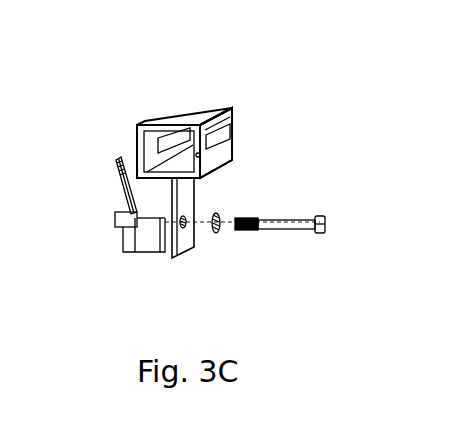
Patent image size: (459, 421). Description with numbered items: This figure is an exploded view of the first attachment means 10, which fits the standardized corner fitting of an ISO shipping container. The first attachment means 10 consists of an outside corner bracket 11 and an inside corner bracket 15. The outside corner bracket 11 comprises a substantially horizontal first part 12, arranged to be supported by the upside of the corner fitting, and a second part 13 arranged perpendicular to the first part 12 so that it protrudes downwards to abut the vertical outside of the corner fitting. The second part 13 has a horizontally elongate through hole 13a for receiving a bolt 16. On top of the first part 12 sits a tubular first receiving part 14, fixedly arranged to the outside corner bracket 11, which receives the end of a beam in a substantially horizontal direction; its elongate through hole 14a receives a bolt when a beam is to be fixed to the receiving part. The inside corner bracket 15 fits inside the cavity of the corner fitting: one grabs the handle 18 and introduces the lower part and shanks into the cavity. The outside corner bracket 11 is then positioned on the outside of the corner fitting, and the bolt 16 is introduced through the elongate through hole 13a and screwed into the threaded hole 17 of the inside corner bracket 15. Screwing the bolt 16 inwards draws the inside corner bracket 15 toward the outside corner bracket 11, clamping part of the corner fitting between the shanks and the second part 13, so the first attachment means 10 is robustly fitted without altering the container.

The first attachment means 10 is at (143, 100).
The outside corner bracket 11 is at (180, 110).
The first part 12 is at (161, 192).
The second part 13 is at (194, 195).
The elongate through hole 13a is at (194, 237).
The first receiving part 14 is at (232, 112).
The elongate through hole 14a is at (222, 133).
The inside corner bracket 15 is at (130, 230).
The bolt 16 is at (328, 223).
The threaded hole 17 is at (123, 223).
The handle 18 is at (114, 158).